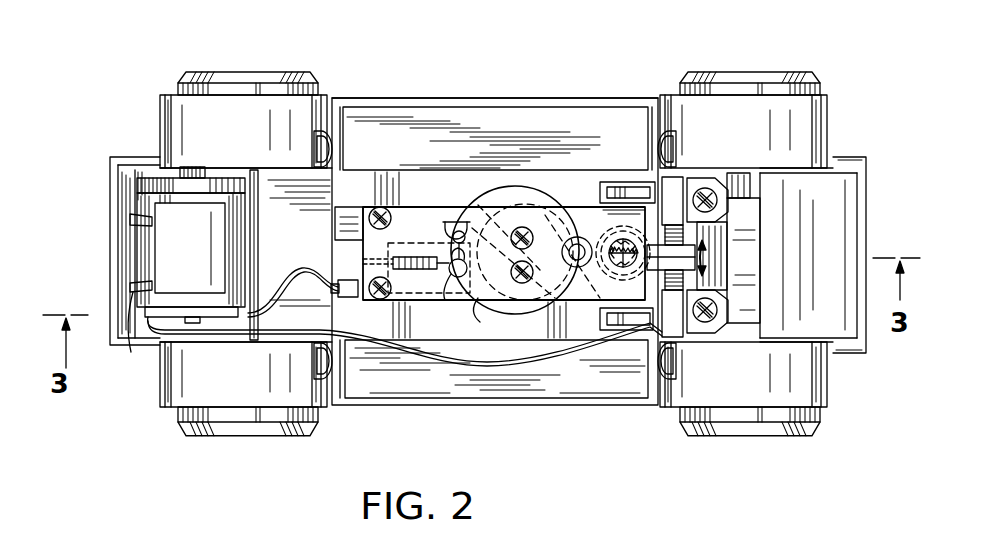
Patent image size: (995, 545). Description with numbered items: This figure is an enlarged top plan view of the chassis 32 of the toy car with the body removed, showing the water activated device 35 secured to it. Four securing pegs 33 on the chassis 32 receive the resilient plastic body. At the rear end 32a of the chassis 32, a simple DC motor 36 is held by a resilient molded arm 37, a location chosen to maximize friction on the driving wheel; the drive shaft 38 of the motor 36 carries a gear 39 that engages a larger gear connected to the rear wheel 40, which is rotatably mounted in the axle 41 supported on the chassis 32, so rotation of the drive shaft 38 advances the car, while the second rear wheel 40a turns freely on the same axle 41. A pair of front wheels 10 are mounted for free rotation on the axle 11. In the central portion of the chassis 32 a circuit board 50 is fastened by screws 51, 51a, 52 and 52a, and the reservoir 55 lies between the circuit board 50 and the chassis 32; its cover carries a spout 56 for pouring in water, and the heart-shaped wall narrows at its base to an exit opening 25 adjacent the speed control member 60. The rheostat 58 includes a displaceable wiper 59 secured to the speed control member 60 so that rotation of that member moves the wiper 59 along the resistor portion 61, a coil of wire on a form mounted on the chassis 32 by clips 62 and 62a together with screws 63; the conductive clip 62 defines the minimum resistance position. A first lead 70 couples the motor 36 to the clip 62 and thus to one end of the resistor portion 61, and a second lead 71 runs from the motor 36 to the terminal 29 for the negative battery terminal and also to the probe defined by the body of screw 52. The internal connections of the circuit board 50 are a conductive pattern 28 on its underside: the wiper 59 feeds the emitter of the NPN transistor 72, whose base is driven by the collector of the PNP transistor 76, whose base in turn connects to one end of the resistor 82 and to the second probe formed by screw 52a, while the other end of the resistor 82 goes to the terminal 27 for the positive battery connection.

The front wheels 10 is at (818, 89).
The axle 11 is at (745, 188).
The exit opening 25 is at (601, 311).
The terminal 27 is at (351, 206).
The conductive pattern 28 is at (498, 317).
The terminal 29 is at (340, 281).
The chassis 32 is at (403, 97).
The rear end 32a is at (110, 205).
The securing pegs 33 is at (333, 133).
The water activated device 35 is at (473, 188).
The DC motor 36 is at (205, 257).
The resilient molded arm 37 is at (131, 350).
The drive shaft 38 is at (204, 176).
The gear 39 is at (175, 172).
The rear wheel 40 is at (232, 71).
The second rear wheel 40a is at (213, 439).
The axle 41 is at (259, 229).
The circuit board 50 is at (435, 229).
The screw 51 is at (380, 299).
The screw 51a is at (379, 208).
The screw 52 is at (521, 284).
The screw 52a is at (526, 228).
The reservoir 55 is at (517, 194).
The spout 56 is at (580, 238).
The rheostat 58 is at (697, 348).
The wiper 59 is at (673, 240).
The speed control member 60 is at (623, 268).
The resistor portion 61 is at (685, 232).
The clip 62 is at (724, 303).
The clip 62a is at (704, 188).
The screws 63 is at (713, 194).
The first lead 70 is at (442, 352).
The second lead 71 is at (300, 270).
The NPN transistor 72 is at (452, 221).
The PNP transistor 76 is at (452, 294).
The resistor 82 is at (424, 257).